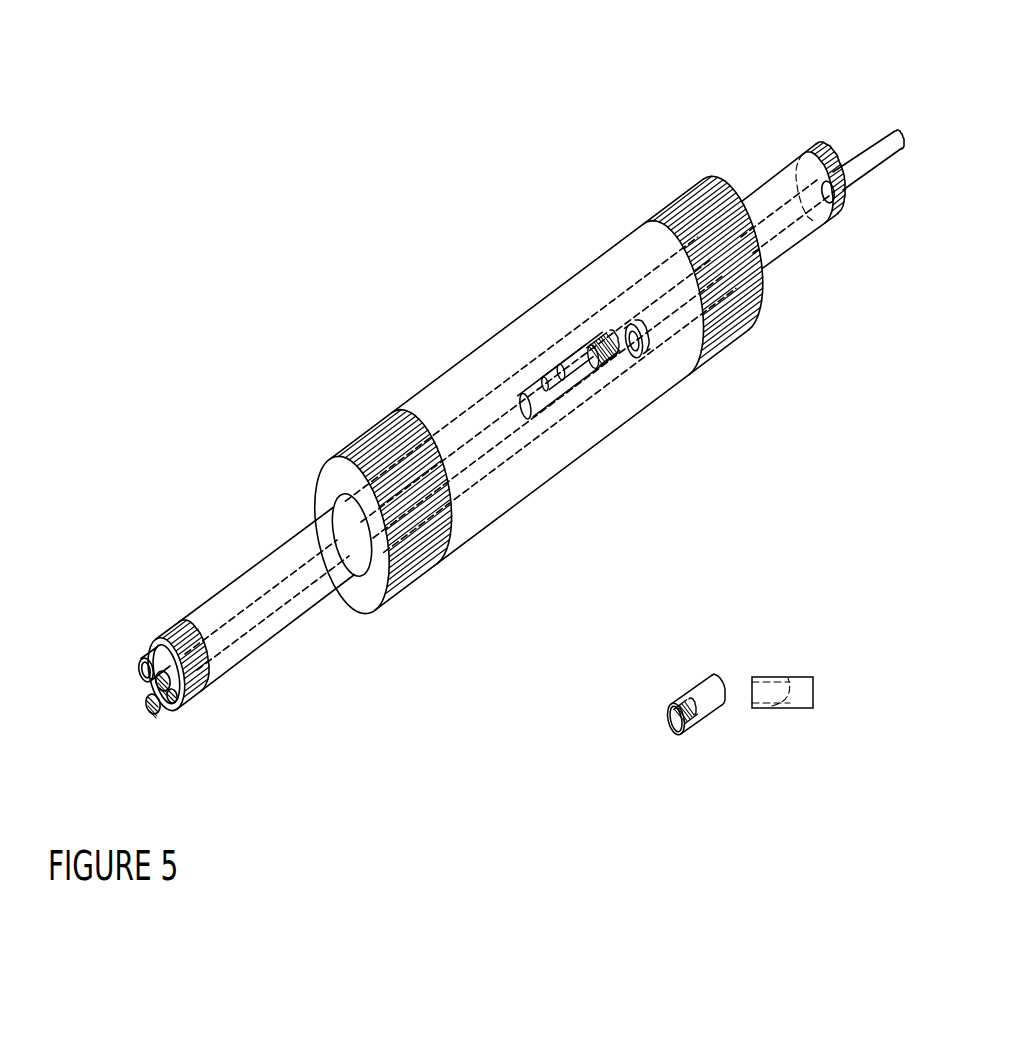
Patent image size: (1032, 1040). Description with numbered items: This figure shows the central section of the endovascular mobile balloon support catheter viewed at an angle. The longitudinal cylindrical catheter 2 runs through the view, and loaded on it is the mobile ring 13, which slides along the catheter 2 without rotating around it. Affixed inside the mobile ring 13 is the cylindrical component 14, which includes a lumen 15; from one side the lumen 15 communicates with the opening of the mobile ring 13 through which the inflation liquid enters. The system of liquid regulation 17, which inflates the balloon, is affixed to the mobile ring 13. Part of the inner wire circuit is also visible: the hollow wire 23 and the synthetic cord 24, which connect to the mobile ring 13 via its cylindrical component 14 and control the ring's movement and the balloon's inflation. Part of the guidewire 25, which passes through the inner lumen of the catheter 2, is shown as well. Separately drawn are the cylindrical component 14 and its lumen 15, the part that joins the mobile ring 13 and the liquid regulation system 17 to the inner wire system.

The longitudinal cylindrical catheter 2 is at (287, 544).
The mobile ring 13 is at (419, 410).
The cylindrical component 14 is at (537, 407).
The lumen 15 is at (673, 718).
The system of liquid regulation 17 is at (578, 372).
The hollow wire 23 is at (141, 673).
The synthetic cord 24 is at (152, 690).
The guidewire 25 is at (861, 187).